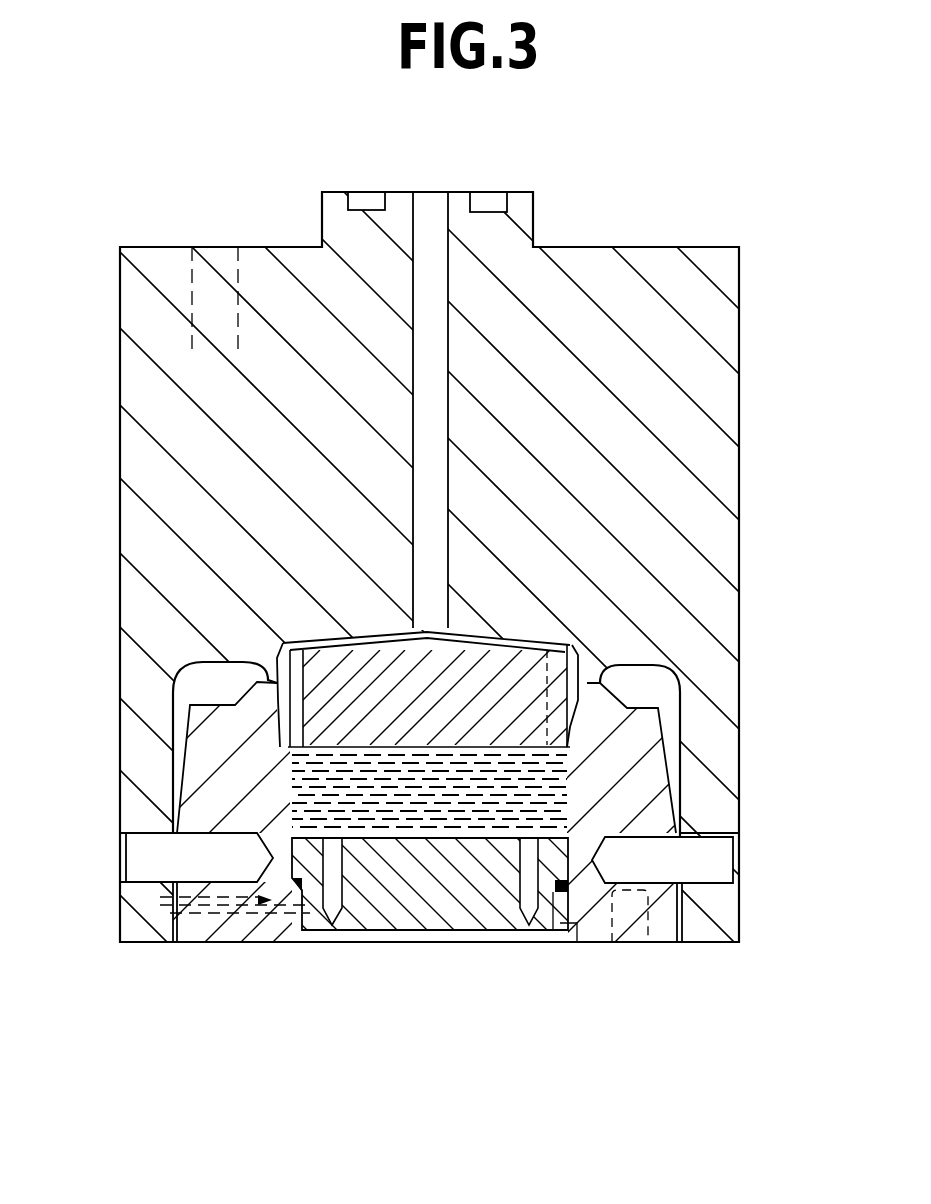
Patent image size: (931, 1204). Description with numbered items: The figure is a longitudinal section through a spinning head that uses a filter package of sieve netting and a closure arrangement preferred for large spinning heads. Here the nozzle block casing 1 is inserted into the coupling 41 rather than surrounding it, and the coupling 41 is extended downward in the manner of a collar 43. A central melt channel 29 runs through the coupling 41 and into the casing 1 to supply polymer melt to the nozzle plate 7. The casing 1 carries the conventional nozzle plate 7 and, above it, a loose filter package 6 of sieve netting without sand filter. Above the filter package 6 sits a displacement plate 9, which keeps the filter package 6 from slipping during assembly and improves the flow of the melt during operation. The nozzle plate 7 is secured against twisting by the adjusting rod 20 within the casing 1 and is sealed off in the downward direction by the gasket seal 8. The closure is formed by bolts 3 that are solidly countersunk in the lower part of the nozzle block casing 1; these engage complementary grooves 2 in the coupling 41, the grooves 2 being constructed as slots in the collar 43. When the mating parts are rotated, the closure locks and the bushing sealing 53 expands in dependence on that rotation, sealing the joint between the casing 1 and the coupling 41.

The coupling 41 is at (167, 567).
The central melt channel 29 is at (440, 430).
The displacement plate 9 is at (337, 672).
The bushing sealing 53 is at (277, 733).
The nozzle block casing 1 is at (197, 763).
The collar 43 is at (680, 785).
The complementary grooves 2 is at (120, 833).
The bolts 3 is at (143, 865).
The filter package 6 is at (392, 840).
The nozzle plate 7 is at (463, 943).
The gasket seal 8 is at (567, 895).
The adjusting rod 20 is at (303, 921).